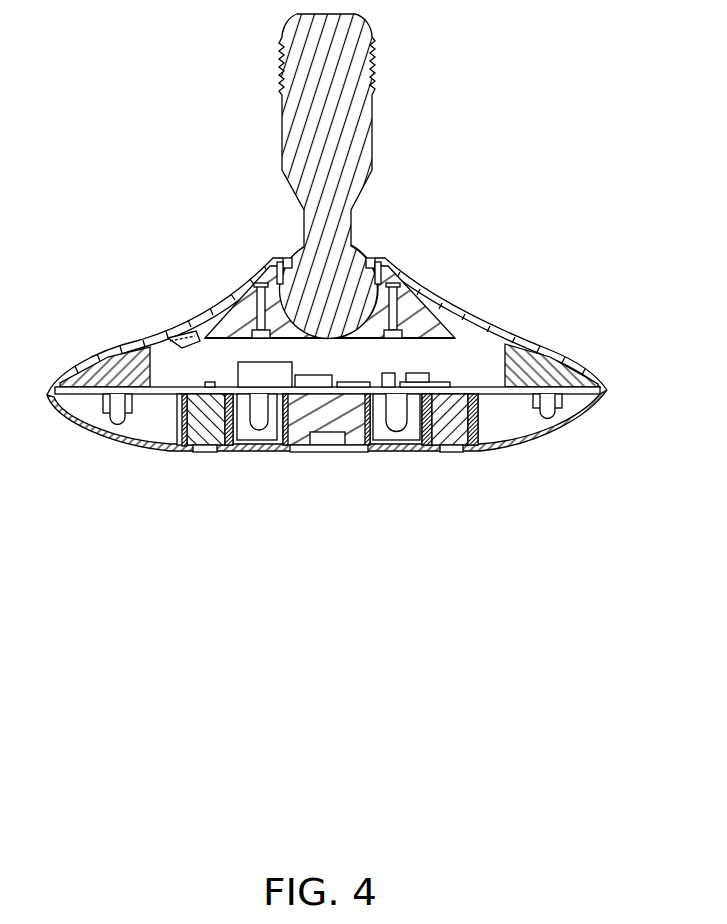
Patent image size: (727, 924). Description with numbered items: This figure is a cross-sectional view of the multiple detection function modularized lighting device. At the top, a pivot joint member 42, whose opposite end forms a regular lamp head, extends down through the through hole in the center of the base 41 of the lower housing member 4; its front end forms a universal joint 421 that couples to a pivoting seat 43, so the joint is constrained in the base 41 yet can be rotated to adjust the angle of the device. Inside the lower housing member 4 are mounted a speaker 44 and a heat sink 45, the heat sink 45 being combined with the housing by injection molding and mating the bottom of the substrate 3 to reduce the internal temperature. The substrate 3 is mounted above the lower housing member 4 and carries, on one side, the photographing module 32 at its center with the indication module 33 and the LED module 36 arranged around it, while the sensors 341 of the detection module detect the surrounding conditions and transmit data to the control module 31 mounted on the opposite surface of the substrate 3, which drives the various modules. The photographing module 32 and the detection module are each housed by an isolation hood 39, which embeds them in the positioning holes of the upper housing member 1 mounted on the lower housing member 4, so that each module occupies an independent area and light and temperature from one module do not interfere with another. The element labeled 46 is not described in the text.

The upper housing member 1 is at (581, 412).
The substrate 3 is at (603, 388).
The control module 31 is at (410, 372).
The photographing module 32 is at (300, 438).
The indication module 33 is at (394, 432).
The sensors 341 is at (184, 450).
The LED module 36 is at (74, 418).
The isolation hoods 39 is at (223, 447).
The lower housing member 4 is at (325, 176).
The base 41 is at (525, 340).
The pivot joint member 42 is at (289, 118).
The universal joint 421 is at (366, 257).
The pivoting seat 43 is at (243, 323).
The speaker 44 is at (183, 333).
The heat sink 45 is at (122, 366).
The retaining ring 46 is at (286, 256).